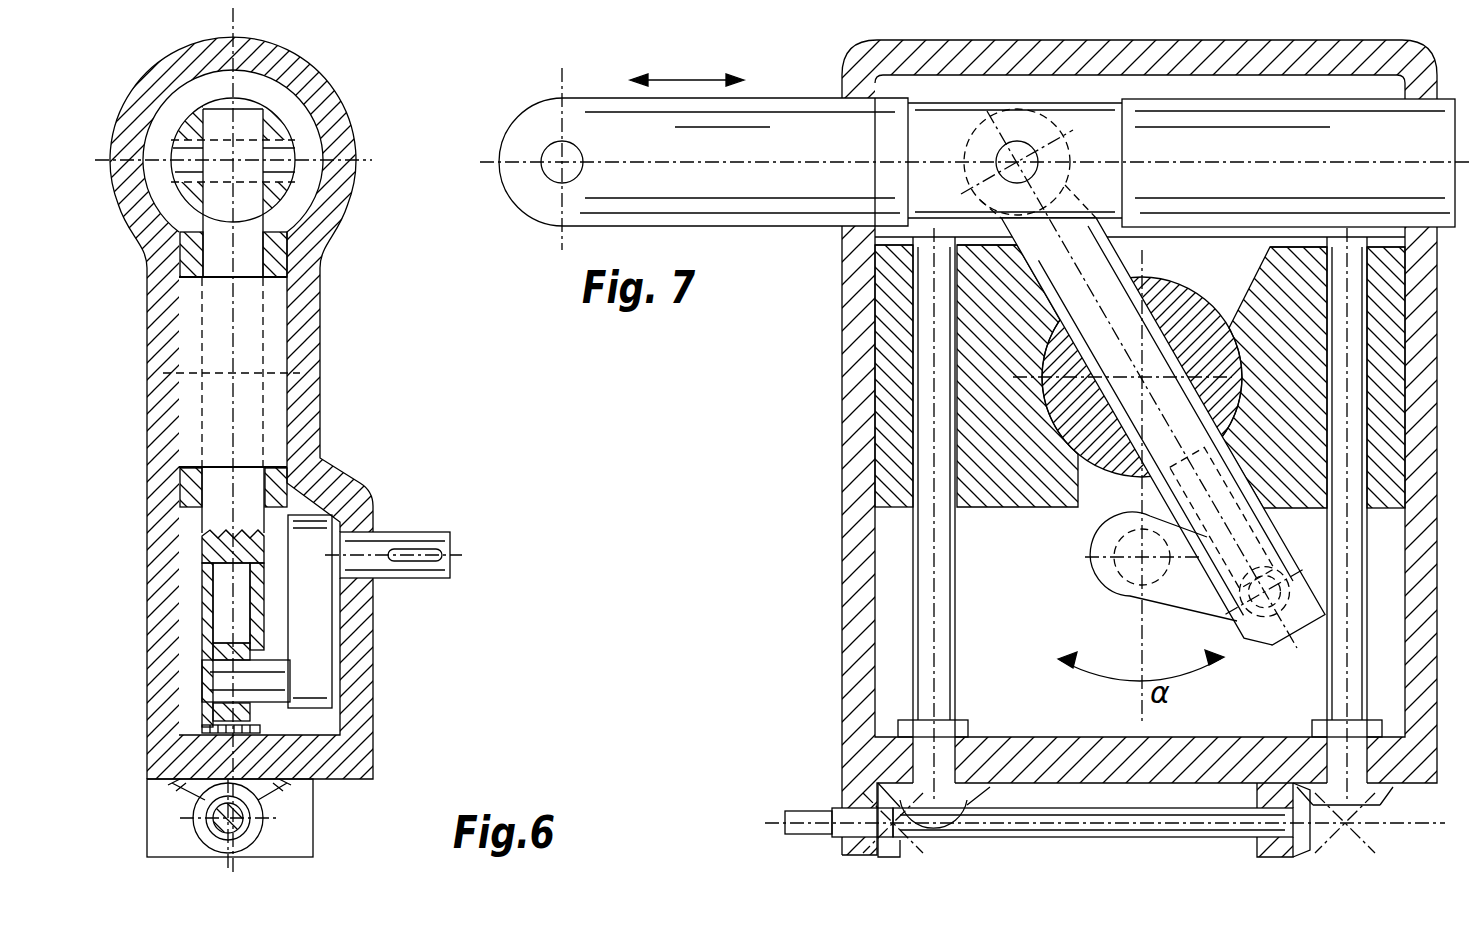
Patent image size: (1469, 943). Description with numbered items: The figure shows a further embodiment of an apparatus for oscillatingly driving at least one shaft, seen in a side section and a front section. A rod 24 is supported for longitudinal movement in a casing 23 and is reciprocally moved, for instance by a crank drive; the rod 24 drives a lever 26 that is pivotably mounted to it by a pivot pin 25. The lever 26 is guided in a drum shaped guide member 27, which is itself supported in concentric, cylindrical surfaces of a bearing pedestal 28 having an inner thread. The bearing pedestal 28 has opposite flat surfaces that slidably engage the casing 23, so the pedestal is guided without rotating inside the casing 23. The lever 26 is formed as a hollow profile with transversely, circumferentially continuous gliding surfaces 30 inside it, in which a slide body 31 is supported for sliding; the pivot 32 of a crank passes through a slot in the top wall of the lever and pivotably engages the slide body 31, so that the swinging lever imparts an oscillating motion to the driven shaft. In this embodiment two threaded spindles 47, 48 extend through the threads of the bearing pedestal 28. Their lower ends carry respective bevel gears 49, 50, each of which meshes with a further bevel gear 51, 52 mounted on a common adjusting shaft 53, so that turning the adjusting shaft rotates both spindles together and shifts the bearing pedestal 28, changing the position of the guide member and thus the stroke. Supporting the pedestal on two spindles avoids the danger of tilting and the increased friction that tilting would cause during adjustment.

In FIG. 6, the casing 23 is at (330, 108).
In FIG. 7, the casing 23 is at (1417, 76).
In FIG. 6, the rod 24 is at (272, 132).
In FIG. 7, the rod 24 is at (783, 118).
In FIG. 6, the pivot pin 25 is at (300, 152).
In FIG. 7, the pivot pin 25 is at (1022, 150).
In FIG. 6, the lever 26 is at (247, 312).
In FIG. 7, the lever 26 is at (1050, 262).
In FIG. 6, the drum shaped guide member 27 is at (277, 357).
In FIG. 7, the drum shaped guide member 27 is at (1110, 437).
In FIG. 6, the bearing pedestal 28 is at (187, 497).
In FIG. 7, the bearing pedestal 28 is at (888, 365).
In FIG. 6, the gliding surfaces 30 is at (217, 585).
In FIG. 6, the slide body 31 is at (263, 645).
In FIG. 6, the pivot 32 is at (268, 693).
In FIG. 7, the threaded spindle 47 is at (927, 423).
In FIG. 7, the threaded spindle 48 is at (1343, 293).
In FIG. 7, the bevel gear 49 is at (900, 788).
In FIG. 6, the bevel gear 50 is at (287, 798).
In FIG. 7, the bevel gear 50 is at (1390, 803).
In FIG. 7, the further bevel gear 51 is at (900, 842).
In FIG. 6, the further bevel gear 52 is at (267, 845).
In FIG. 7, the further bevel gear 52 is at (1323, 840).
In FIG. 6, the drive shaft 53 is at (263, 832).
In FIG. 7, the drive shaft 53 is at (1092, 830).